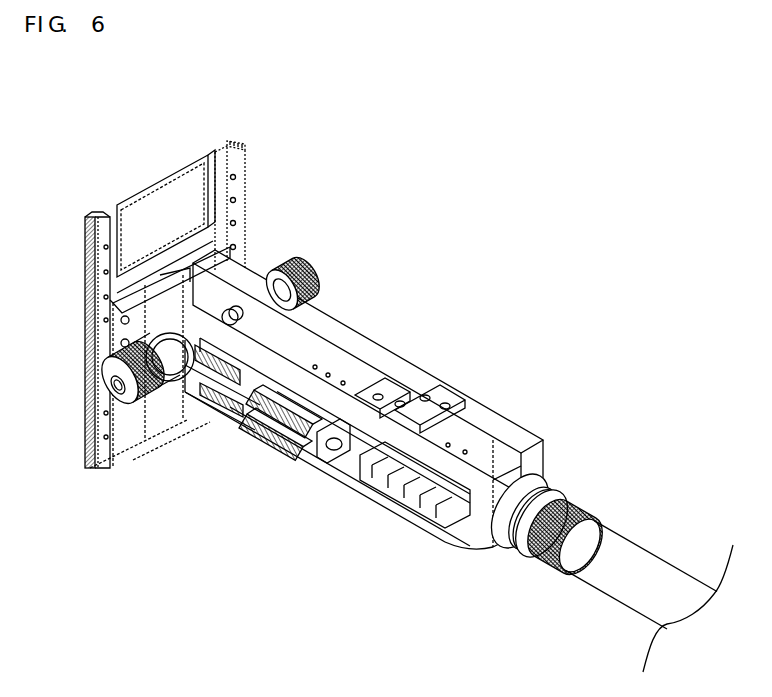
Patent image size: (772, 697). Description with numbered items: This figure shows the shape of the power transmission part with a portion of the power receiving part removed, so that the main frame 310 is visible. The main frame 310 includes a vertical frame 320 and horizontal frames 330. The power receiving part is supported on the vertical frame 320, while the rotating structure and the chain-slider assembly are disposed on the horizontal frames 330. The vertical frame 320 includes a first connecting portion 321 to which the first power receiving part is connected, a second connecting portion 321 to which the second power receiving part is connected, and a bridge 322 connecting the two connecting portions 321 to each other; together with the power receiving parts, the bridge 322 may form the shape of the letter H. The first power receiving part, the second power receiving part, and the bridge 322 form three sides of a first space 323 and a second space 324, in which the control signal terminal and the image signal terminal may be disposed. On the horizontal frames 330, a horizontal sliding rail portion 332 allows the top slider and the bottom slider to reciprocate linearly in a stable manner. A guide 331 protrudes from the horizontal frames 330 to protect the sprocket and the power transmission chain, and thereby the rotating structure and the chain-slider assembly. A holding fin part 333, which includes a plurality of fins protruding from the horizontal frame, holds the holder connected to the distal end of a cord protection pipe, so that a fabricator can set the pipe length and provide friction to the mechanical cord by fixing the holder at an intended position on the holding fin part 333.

The main frame 310 is at (440, 232).
The vertical frame 320 is at (237, 258).
The connecting portion 321 is at (237, 207).
The bridge 322 is at (158, 447).
The first space 323 is at (148, 186).
The second space 324 is at (167, 445).
The horizontal frame 330 is at (327, 318).
The guide 331 is at (313, 457).
The horizontal sliding rail portion 332 is at (355, 455).
The holding fin part 333 is at (430, 533).